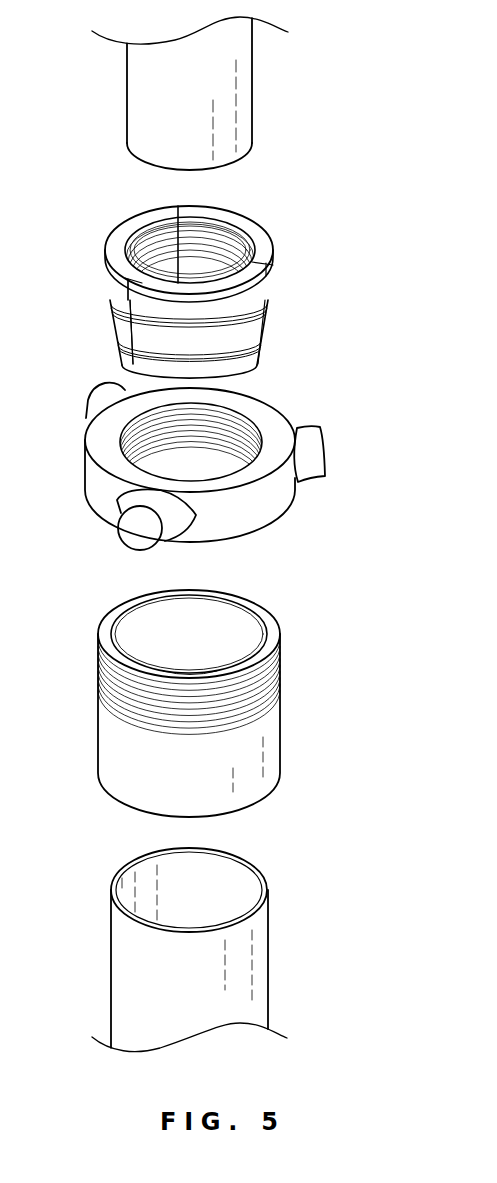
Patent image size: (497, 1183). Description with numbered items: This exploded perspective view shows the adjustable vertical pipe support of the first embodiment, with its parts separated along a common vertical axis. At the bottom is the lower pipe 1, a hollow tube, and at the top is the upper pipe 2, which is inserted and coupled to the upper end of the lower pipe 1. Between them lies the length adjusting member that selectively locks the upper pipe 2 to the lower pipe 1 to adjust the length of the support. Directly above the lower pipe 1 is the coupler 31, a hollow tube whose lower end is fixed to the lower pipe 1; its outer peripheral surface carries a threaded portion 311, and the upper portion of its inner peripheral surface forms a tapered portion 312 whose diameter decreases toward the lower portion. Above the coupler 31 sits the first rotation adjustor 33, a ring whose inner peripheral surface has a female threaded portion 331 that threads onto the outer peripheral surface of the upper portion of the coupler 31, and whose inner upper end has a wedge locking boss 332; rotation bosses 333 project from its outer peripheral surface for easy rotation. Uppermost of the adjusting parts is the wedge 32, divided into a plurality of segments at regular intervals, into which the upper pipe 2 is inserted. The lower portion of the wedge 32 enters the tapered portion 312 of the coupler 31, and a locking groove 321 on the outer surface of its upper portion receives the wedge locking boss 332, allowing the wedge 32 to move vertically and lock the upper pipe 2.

The lower pipe 1 is at (264, 955).
The upper pipe 2 is at (252, 97).
The coupler 31 is at (212, 685).
The threaded portion 311 is at (103, 673).
The tapered portion 312 is at (131, 623).
The wedge 32 is at (286, 310).
The locking groove 321 is at (112, 293).
The first rotation adjustor 33 is at (247, 458).
The female threaded portion 331 is at (228, 431).
The wedge locking boss 332 is at (177, 409).
The rotation boss 333 is at (326, 445).